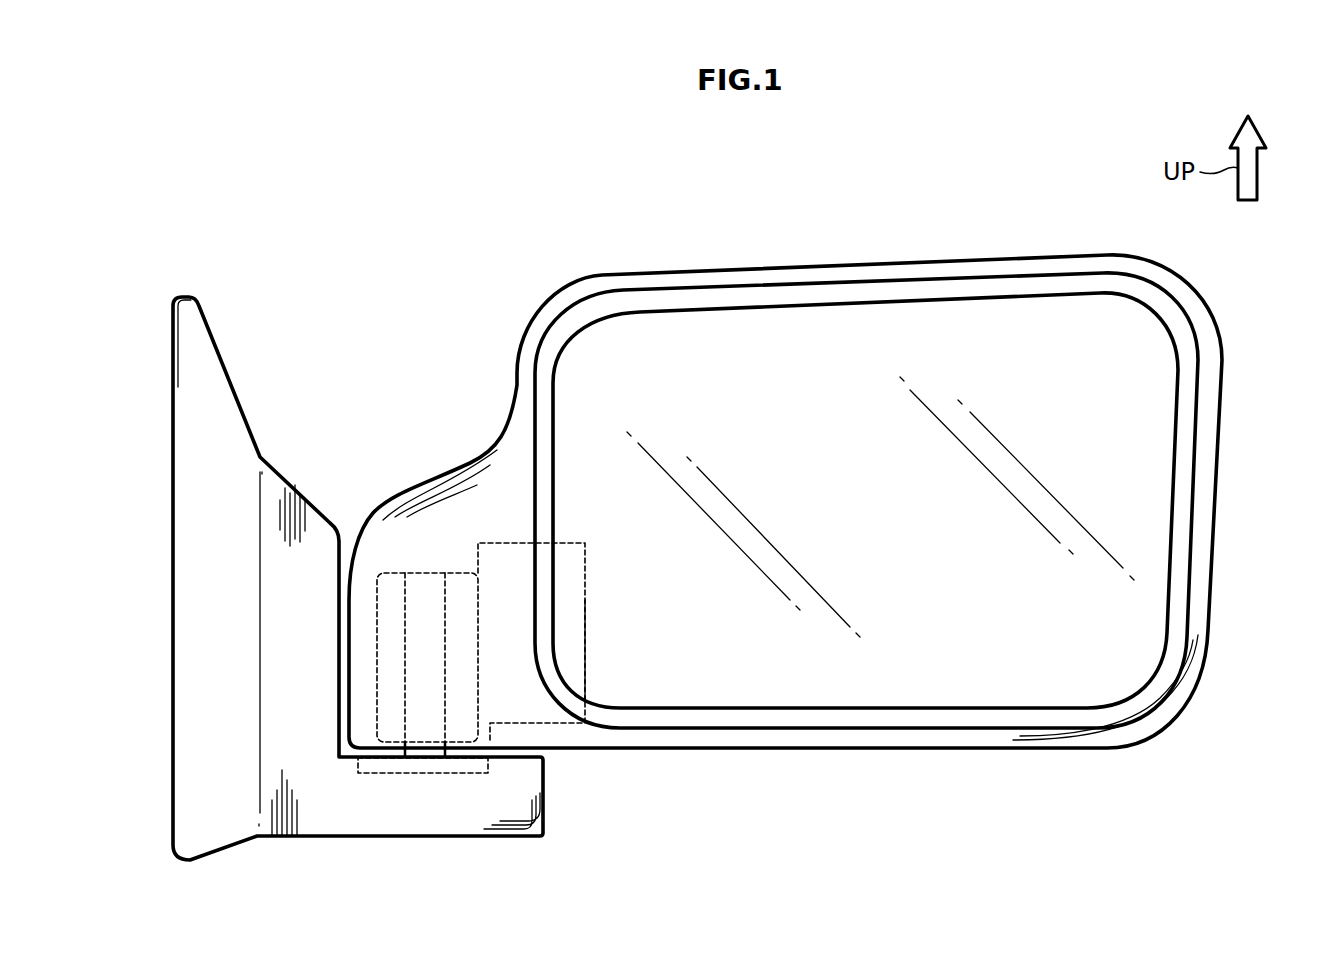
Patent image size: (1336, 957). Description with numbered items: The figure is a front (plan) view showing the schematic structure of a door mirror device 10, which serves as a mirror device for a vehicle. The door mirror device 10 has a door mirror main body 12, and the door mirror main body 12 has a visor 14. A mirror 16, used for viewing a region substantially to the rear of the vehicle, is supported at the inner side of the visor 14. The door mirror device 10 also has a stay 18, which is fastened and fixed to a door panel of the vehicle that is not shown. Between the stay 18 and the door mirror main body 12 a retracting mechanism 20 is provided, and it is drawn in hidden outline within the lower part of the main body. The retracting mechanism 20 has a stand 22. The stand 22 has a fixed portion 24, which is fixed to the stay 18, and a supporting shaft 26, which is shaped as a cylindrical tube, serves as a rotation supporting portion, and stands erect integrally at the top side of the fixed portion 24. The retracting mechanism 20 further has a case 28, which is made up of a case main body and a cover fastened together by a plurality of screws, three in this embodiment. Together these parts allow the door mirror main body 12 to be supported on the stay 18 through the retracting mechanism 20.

The door mirror device 10 is at (386, 291).
The door mirror main body 12 is at (501, 409).
The visor 14 is at (1213, 503).
The mirror 16 is at (1150, 603).
The stay 18 is at (245, 416).
The retracting mechanism 20 is at (590, 572).
The stand 22 is at (402, 650).
The fixed portion 24 is at (432, 773).
The supporting shaft 26 is at (445, 676).
The case 28 is at (585, 635).